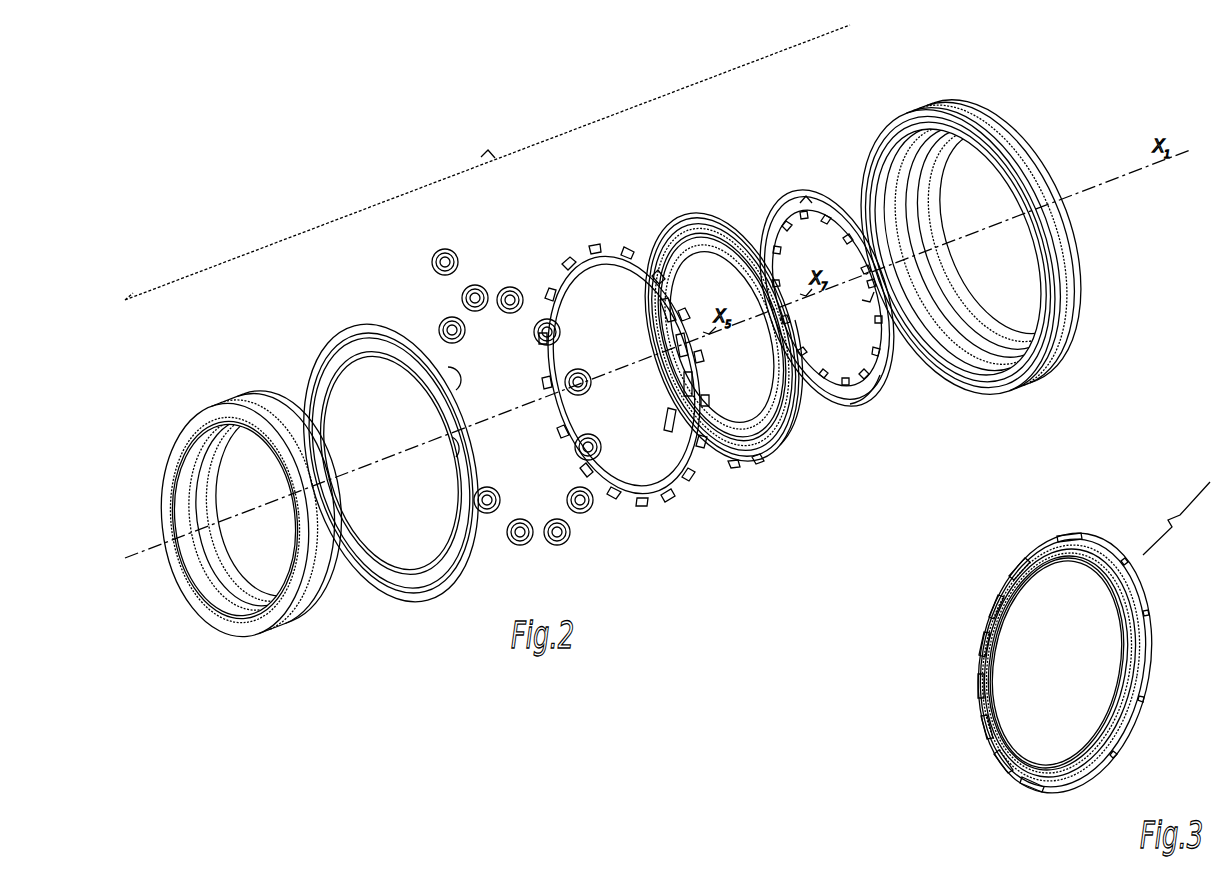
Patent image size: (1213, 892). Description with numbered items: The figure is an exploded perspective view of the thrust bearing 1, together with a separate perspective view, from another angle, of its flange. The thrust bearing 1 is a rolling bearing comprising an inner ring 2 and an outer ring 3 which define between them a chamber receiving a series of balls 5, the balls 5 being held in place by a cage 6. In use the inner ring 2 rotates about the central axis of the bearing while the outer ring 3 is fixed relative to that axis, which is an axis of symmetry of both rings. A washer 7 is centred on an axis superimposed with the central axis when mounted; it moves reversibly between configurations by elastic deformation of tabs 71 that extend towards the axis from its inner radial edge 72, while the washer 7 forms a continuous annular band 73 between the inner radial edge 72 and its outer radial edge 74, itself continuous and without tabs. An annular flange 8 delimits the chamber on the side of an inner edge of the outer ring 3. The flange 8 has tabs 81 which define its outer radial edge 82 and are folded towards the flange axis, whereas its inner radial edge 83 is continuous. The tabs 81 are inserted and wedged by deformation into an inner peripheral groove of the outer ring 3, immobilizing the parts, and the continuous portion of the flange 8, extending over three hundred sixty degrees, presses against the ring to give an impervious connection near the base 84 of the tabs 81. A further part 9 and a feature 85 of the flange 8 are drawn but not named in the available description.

In FIG. 2, the thrust bearing 1 is at (487, 162).
In FIG. 2, the inner ring 2 is at (212, 391).
In FIG. 2, the outer ring 3 is at (863, 152).
In FIG. 2, the balls 5 is at (437, 308).
In FIG. 2, the cage 6 is at (547, 262).
In FIG. 2, the washer 7 is at (778, 190).
In FIG. 2, the annular flange 8 is at (659, 220).
In FIG. 2, the washer ring 9 is at (312, 355).
In FIG. 2, the tabs 71 is at (845, 382).
In FIG. 2, the inner radial edge 72 is at (870, 291).
In FIG. 2, the continuous annular band 73 is at (803, 194).
In FIG. 2, the outer radial edge 74 is at (868, 408).
In FIG. 2, the tabs 81 is at (757, 462).
In FIG. 3, the tabs 81 is at (1096, 537).
In FIG. 2, the outer radial edge 82 is at (789, 444).
In FIG. 3, the outer radial edge 82 is at (979, 650).
In FIG. 2, the inner radial edge 83 is at (755, 421).
In FIG. 3, the inner radial edge 83 is at (1060, 766).
In FIG. 2, the base 84 is at (740, 434).
In FIG. 2, the groove 85 is at (655, 231).
In FIG. 3, the groove 85 is at (1082, 572).